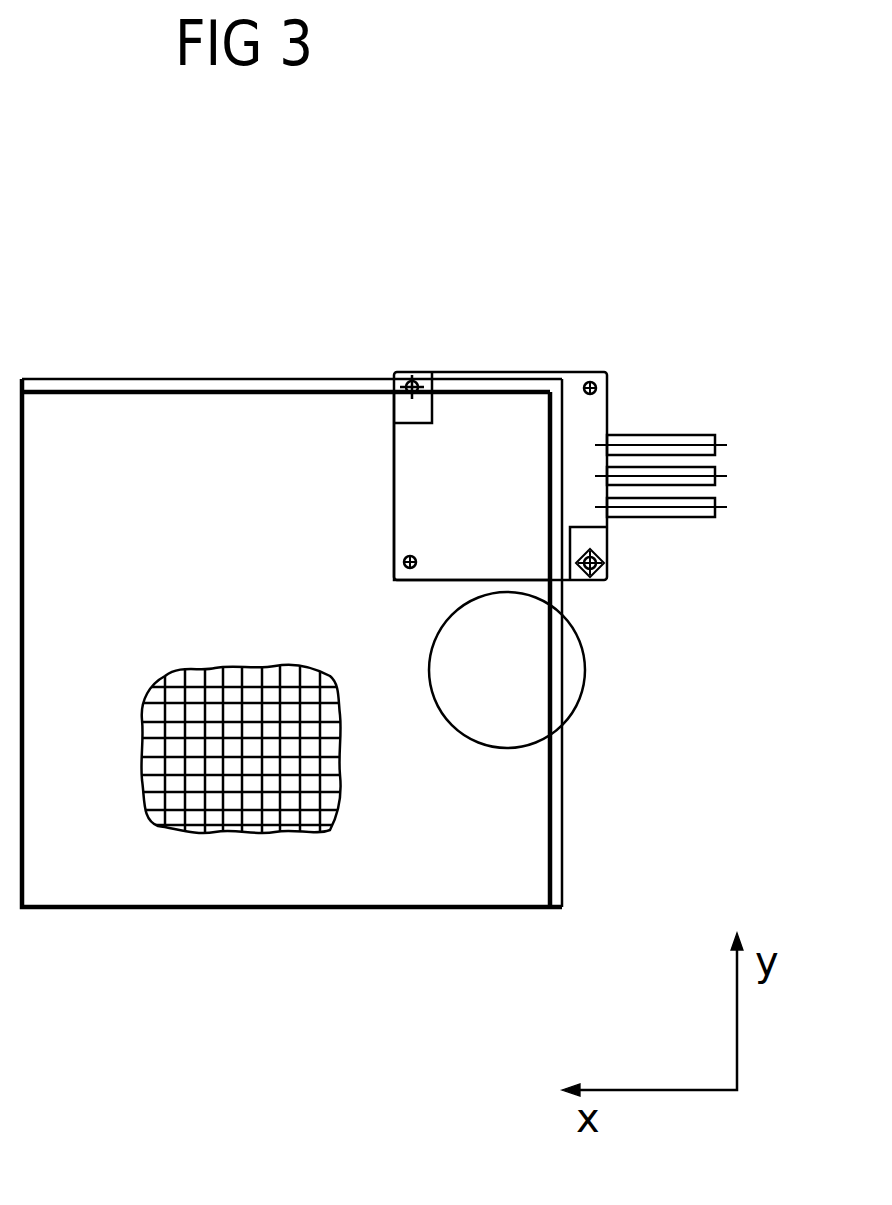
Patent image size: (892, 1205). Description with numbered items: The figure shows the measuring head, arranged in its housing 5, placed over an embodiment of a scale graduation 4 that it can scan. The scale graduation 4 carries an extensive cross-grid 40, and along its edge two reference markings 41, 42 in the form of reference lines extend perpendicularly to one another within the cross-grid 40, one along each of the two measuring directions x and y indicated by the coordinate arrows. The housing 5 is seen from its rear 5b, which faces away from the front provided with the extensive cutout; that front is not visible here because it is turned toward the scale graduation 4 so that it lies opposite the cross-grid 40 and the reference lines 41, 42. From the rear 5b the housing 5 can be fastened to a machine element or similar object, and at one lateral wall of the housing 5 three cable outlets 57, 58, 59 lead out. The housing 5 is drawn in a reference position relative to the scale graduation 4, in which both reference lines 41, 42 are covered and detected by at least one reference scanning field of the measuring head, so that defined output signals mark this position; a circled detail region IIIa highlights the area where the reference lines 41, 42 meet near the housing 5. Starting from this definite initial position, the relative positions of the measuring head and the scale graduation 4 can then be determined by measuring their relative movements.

The scale graduation 4 is at (310, 907).
The reference marking 41 is at (313, 390).
The reference marking 42 is at (553, 781).
The housing 5 is at (573, 368).
The rear of the housing 5b is at (492, 422).
The cable outlet 57 is at (698, 442).
The cable outlet 58 is at (700, 476).
The cable outlet 59 is at (700, 513).
The cross-grid 40 is at (183, 810).
The detail region IIIa is at (583, 650).